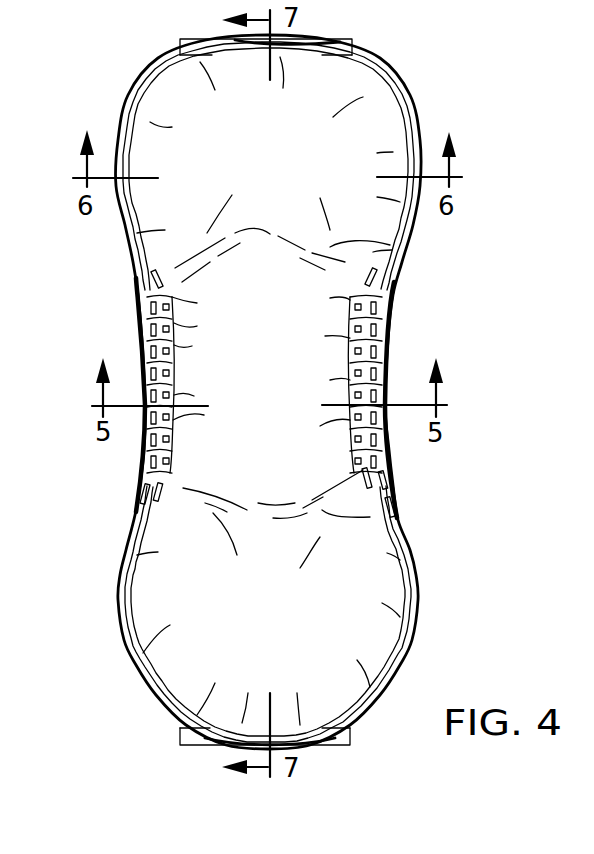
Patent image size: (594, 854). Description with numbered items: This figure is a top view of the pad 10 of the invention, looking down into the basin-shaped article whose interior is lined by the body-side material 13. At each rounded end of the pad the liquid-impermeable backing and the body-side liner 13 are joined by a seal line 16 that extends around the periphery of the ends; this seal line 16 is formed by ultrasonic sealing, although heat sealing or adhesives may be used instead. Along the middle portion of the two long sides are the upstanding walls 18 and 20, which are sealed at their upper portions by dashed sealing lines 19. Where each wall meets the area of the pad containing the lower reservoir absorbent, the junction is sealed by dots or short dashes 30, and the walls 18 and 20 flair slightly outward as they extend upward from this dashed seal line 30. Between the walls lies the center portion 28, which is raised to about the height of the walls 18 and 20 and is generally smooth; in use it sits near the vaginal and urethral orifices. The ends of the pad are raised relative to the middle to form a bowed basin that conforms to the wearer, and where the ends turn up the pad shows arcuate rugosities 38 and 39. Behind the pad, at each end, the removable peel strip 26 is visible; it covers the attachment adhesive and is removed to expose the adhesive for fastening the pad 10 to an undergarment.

The pad 10 is at (84, 104).
The body-side material 13 is at (172, 88).
The seal line 16 is at (388, 118).
The upstanding wall 18 is at (143, 325).
The dashed sealing lines 19 is at (377, 318).
The upstanding wall 20 is at (387, 295).
The peel strip 26 is at (354, 43).
The center portion 28 is at (281, 372).
The dots or short dashes 30 is at (150, 432).
The arcuate rugosities 38 is at (333, 243).
The arcuate rugosities 39 is at (325, 517).